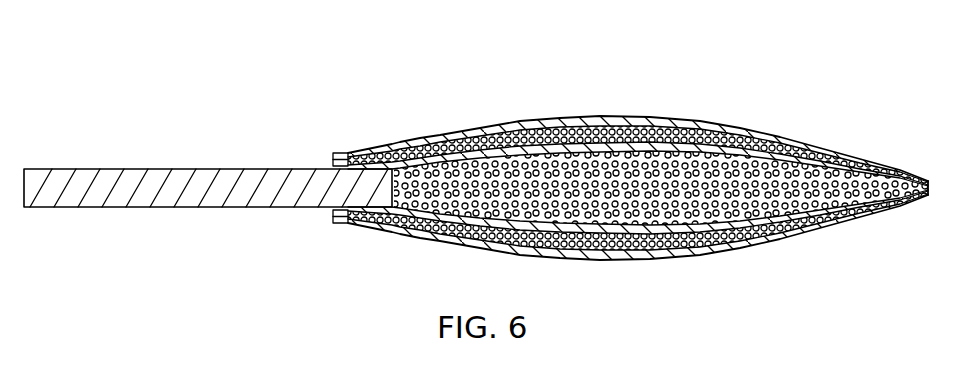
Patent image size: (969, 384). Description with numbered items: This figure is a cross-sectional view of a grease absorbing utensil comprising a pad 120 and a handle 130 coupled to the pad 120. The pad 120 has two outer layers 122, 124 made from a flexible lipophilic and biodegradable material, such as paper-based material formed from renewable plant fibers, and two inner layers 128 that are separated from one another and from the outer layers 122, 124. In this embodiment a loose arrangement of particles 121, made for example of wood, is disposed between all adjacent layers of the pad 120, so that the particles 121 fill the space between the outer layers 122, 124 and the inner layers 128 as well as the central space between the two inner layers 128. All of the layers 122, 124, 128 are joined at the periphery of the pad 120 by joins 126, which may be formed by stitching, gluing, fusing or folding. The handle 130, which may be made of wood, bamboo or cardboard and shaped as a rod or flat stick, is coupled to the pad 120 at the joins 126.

The pad 120 is at (618, 191).
The particles 121 is at (498, 140).
The outer layer 122 is at (582, 117).
The outer layer 124 is at (694, 250).
The joins 126 is at (334, 153).
The inner layers 128 is at (743, 129).
The handle 130 is at (133, 198).